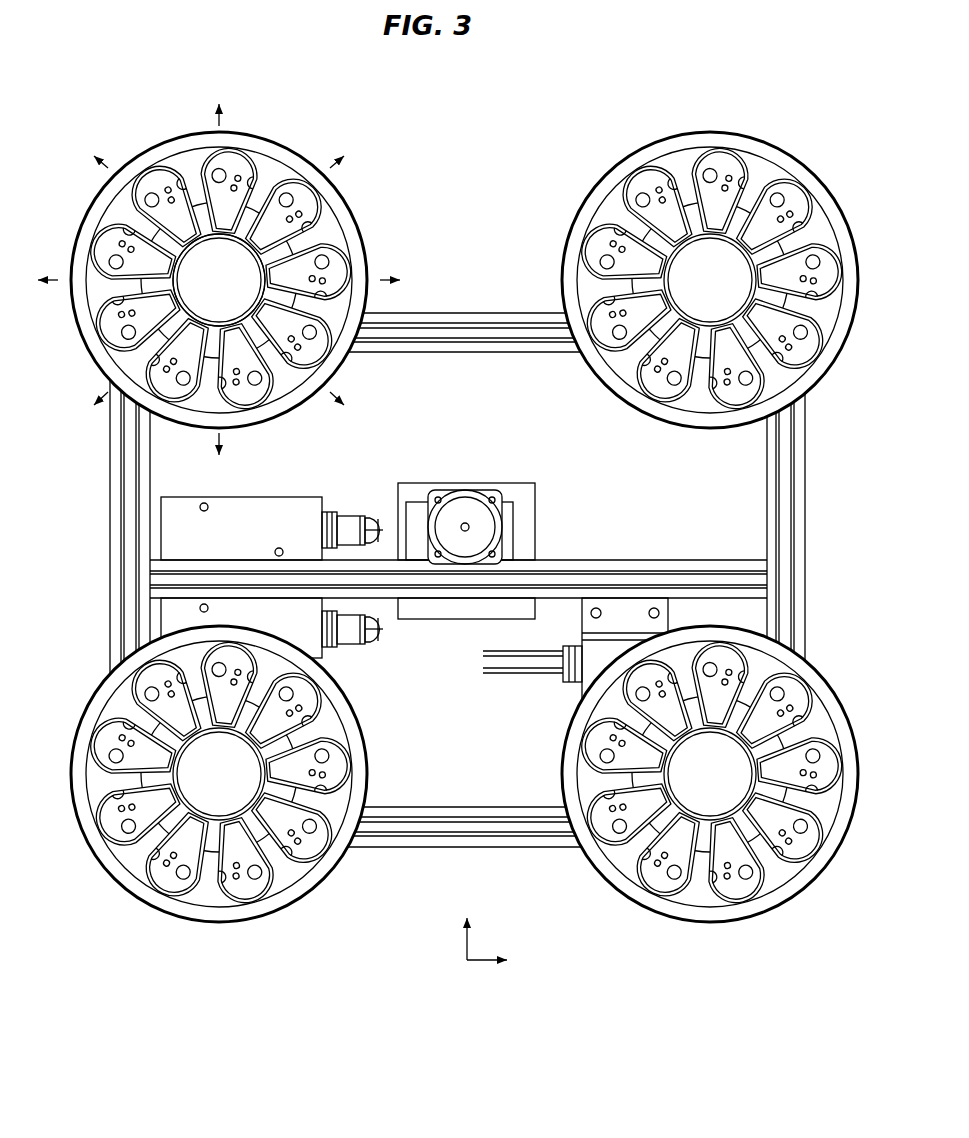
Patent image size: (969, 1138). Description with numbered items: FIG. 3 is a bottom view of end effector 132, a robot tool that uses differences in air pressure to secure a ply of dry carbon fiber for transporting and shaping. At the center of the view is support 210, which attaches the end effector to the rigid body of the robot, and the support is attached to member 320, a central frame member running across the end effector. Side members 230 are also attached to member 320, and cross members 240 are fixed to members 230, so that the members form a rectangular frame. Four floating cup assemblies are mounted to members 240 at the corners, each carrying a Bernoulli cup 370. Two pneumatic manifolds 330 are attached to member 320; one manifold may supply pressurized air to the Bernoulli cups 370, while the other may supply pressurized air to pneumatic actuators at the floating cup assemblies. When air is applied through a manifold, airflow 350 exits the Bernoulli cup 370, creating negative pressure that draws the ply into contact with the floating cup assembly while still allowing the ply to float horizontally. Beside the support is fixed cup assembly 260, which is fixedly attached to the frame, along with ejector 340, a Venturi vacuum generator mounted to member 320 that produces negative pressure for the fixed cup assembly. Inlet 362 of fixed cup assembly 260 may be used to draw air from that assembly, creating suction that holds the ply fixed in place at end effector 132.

The end effector 132 is at (598, 57).
The support 210 is at (448, 619).
The member 230 is at (110, 524).
The member 240 is at (462, 313).
The fixed cup assembly 260 is at (476, 468).
The member 320 is at (648, 560).
The pneumatic manifold 330 is at (277, 497).
The ejector 340 is at (572, 682).
The airflow 350 is at (216, 113).
The inlet 362 is at (468, 525).
The Bernoulli cup 370 is at (190, 290).